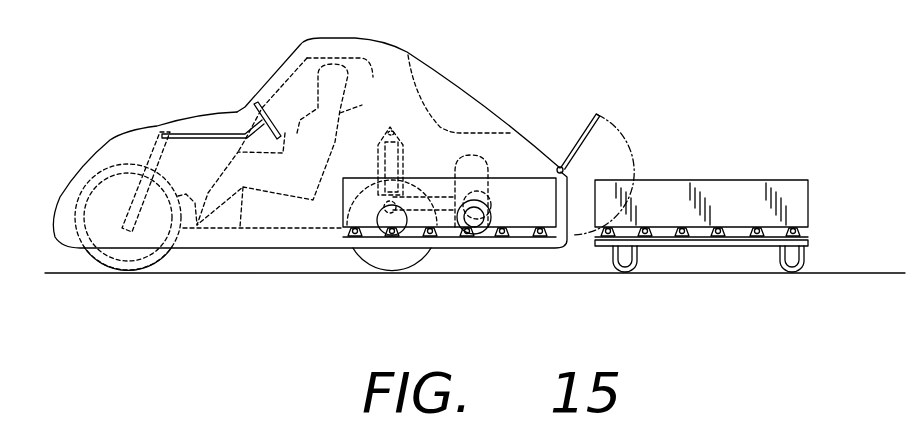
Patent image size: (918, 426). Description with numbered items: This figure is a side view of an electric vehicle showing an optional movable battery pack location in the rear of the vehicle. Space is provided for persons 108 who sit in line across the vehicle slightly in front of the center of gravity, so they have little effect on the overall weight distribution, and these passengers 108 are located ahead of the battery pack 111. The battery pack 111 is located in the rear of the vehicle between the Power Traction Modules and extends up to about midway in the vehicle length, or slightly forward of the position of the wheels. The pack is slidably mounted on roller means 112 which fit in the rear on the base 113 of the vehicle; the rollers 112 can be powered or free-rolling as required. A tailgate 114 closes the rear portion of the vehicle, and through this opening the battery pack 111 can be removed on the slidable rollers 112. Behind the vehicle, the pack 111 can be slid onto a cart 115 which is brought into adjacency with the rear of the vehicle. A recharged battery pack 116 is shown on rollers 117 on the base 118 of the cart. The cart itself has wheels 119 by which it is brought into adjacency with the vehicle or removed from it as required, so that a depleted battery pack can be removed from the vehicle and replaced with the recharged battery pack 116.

The persons 108 is at (330, 64).
The battery pack 111 is at (548, 205).
The roller means 112 is at (514, 238).
The base 113 is at (493, 237).
The tailgate 114 is at (594, 123).
The cart 115 is at (809, 243).
The battery pack 116 is at (715, 179).
The rollers 117 is at (724, 237).
The base 118 is at (697, 246).
The wheels 119 is at (630, 275).